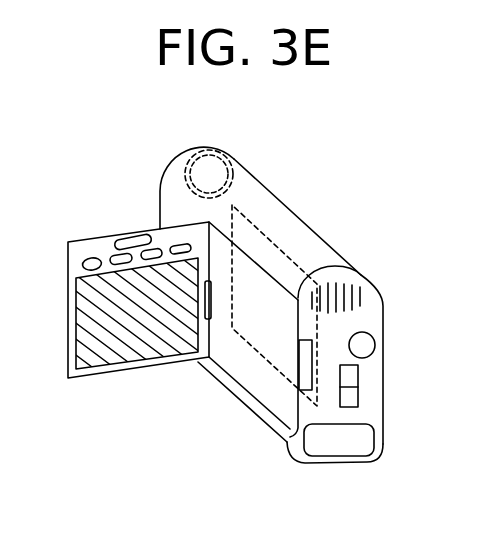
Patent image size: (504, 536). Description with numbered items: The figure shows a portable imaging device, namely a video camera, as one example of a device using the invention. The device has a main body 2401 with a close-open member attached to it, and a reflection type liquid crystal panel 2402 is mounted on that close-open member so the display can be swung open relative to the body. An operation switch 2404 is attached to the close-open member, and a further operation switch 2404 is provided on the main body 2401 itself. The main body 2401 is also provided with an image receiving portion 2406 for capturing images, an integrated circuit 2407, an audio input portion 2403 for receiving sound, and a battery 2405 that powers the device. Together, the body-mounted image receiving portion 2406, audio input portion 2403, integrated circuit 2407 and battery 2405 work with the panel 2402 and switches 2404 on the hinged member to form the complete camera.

The main body 2401 is at (278, 220).
The reflection type liquid crystal panel 2402 is at (138, 347).
The audio input portion 2403 is at (353, 304).
The operation switch 2404 is at (138, 243).
The battery 2405 is at (332, 441).
The image receiving portion 2406 is at (187, 162).
The integrated circuit 2407 is at (249, 171).